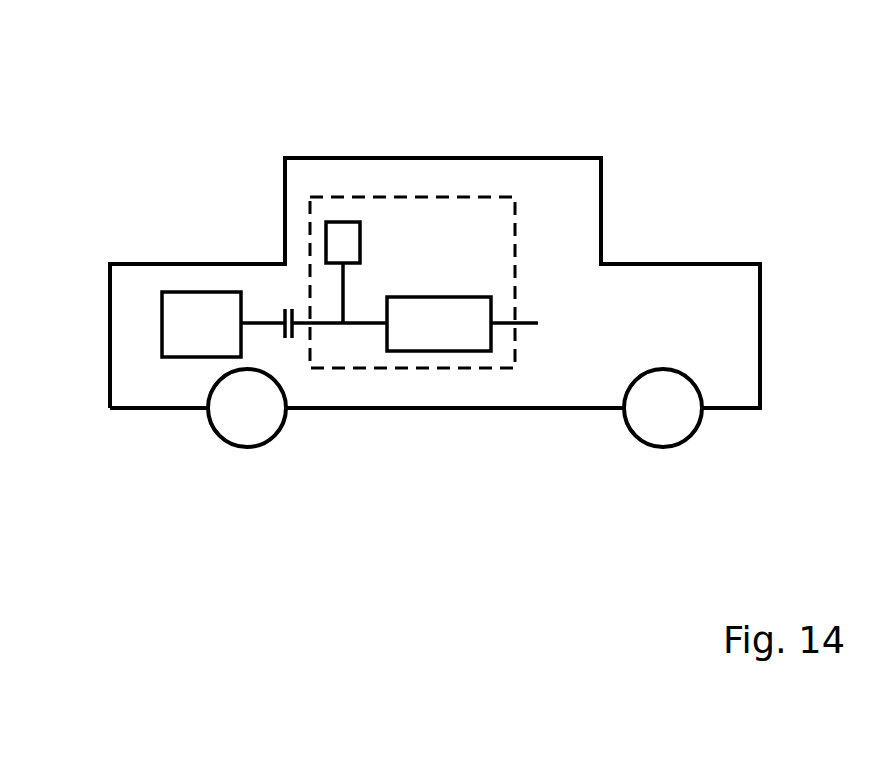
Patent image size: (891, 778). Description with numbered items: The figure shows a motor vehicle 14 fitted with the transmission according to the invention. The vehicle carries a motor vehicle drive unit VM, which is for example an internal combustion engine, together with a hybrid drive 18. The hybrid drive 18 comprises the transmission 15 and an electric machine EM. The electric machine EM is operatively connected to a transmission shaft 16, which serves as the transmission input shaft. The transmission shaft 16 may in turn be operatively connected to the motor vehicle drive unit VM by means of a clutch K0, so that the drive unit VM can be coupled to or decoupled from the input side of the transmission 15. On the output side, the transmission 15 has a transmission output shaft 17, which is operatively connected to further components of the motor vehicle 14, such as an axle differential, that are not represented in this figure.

The motor vehicle 14 is at (682, 158).
The transmission 15 is at (456, 260).
The transmission shaft 16 is at (359, 459).
The transmission output shaft 17 is at (530, 322).
The hybrid drive 18 is at (412, 196).
The motor vehicle drive unit VM is at (153, 191).
The clutch K0 is at (234, 181).
The electric machine EM is at (320, 174).